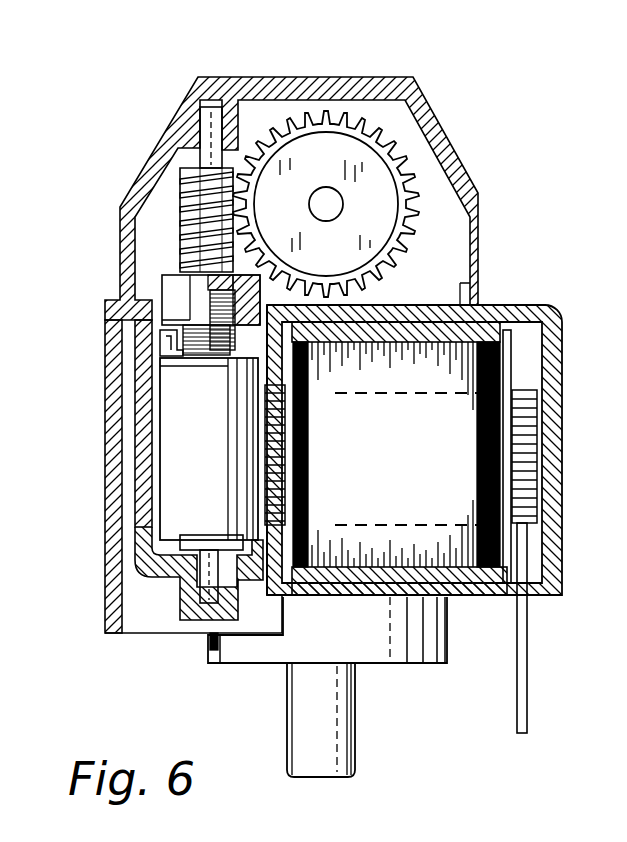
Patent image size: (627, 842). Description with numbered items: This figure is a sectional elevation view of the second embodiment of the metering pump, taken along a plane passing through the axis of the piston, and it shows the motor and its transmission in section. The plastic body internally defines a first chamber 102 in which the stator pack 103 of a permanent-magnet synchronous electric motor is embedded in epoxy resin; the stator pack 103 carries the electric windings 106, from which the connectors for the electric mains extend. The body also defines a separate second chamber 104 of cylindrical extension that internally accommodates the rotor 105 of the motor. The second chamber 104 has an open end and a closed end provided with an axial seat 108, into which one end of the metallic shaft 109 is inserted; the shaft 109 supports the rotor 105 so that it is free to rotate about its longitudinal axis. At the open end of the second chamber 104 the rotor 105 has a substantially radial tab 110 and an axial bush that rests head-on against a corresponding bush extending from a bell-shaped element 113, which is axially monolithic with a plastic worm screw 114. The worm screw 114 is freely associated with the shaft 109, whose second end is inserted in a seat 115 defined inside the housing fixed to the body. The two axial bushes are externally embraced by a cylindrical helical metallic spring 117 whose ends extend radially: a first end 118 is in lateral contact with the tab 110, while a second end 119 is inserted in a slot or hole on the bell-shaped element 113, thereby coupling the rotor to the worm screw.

The first chamber 102 is at (130, 555).
The stator pack 103 is at (530, 473).
The second chamber 104 is at (167, 486).
The rotor 105 is at (197, 500).
The electric windings 106 is at (460, 440).
The axial seat 108 is at (237, 597).
The shaft 109 is at (216, 592).
The radial tab 110 is at (165, 347).
The bell-shaped element 113 is at (175, 293).
The worm screw 114 is at (185, 232).
The seat 115 is at (205, 127).
The cylindrical helical metallic spring 117 is at (200, 357).
The first end 118 is at (178, 362).
The second end 119 is at (263, 257).